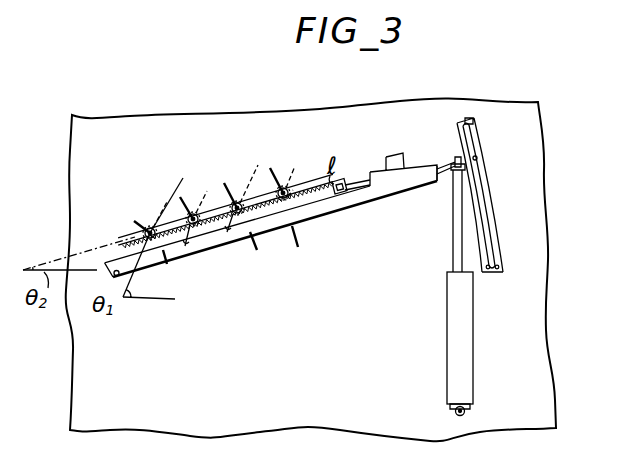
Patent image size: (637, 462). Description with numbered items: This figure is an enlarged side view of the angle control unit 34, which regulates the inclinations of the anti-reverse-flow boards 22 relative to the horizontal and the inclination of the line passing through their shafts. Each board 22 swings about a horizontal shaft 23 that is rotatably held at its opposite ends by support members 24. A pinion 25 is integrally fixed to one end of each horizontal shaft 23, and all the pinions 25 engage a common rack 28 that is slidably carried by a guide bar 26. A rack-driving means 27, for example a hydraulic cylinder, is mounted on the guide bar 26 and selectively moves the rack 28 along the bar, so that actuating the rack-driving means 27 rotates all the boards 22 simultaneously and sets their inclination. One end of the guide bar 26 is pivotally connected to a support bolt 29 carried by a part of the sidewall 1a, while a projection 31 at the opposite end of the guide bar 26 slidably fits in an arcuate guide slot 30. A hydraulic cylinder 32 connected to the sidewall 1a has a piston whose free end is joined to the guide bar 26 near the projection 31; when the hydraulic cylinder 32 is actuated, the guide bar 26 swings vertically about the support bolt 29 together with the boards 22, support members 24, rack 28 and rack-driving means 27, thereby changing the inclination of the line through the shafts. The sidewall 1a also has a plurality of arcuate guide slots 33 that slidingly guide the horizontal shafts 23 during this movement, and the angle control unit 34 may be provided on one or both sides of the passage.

The sidewall 1a is at (163, 135).
The anti-reverse-flow board 22 is at (247, 185).
The horizontal shaft 23 is at (161, 235).
The support member 24 is at (216, 209).
The pinion 25 is at (216, 221).
The guide bar 26 is at (353, 205).
The rack-driving means 27 is at (405, 167).
The rack 28 is at (332, 196).
The support bolt 29 is at (113, 277).
The arcuate guide slot 30 is at (495, 236).
The projection 31 is at (478, 157).
The hydraulic cylinder 32 is at (463, 318).
The arcuate guide slots 33 is at (180, 200).
The angle control unit 34 is at (304, 175).